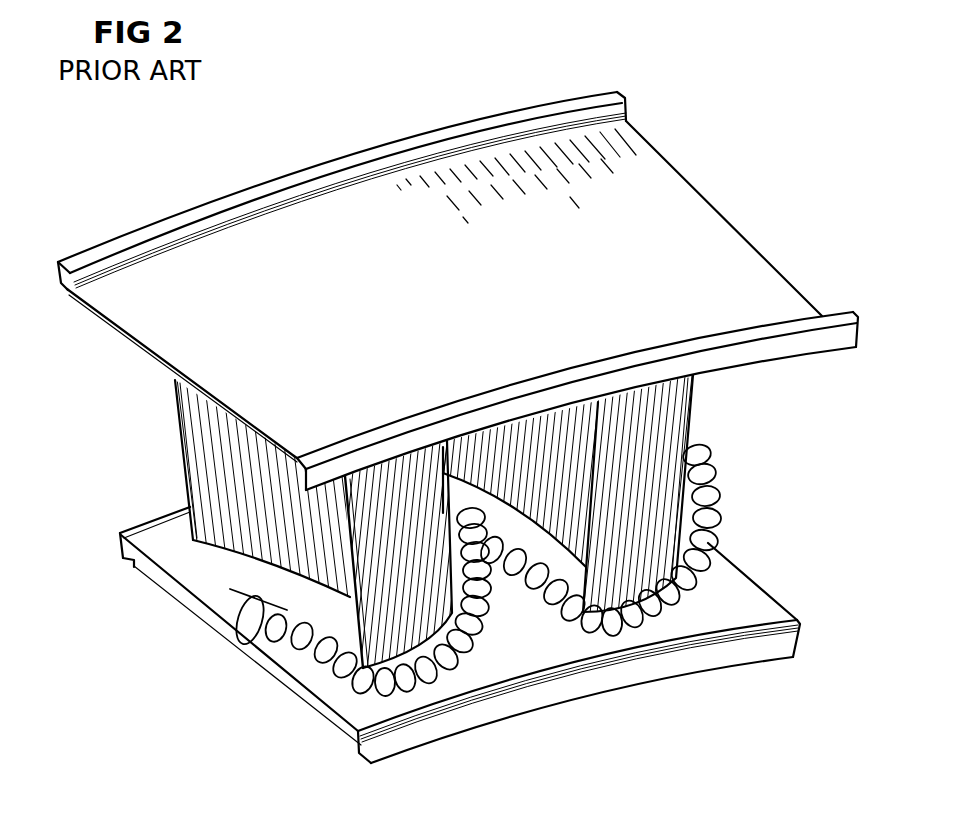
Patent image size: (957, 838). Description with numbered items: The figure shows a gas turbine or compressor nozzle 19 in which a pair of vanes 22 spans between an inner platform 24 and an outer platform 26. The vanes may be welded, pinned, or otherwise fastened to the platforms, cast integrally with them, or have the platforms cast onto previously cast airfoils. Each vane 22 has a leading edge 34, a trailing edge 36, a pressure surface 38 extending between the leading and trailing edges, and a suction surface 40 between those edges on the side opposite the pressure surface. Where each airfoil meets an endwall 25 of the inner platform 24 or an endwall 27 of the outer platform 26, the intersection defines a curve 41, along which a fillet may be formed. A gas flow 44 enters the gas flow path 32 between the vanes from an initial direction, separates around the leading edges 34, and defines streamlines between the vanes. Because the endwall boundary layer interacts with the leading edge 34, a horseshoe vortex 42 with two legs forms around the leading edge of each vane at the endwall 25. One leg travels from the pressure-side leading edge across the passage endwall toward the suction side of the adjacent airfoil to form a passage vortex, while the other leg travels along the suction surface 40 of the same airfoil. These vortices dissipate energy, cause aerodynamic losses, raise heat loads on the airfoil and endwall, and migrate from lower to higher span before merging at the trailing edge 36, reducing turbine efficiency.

The nozzle 19 is at (301, 111).
The outer platform 26 is at (735, 191).
The endwall 27 is at (132, 348).
The vane 22 is at (712, 421).
The gas flow path 32 is at (541, 429).
The inner platform 24 is at (758, 544).
The endwall 25 is at (233, 612).
The trailing edge 36 is at (175, 404).
The pressure surface 38 is at (277, 490).
The leading edge 34 is at (353, 497).
The suction surface 40 is at (410, 493).
The curve 41 is at (235, 549).
The horseshoe vortex 42 is at (684, 594).
The gas flow 44 is at (495, 667).